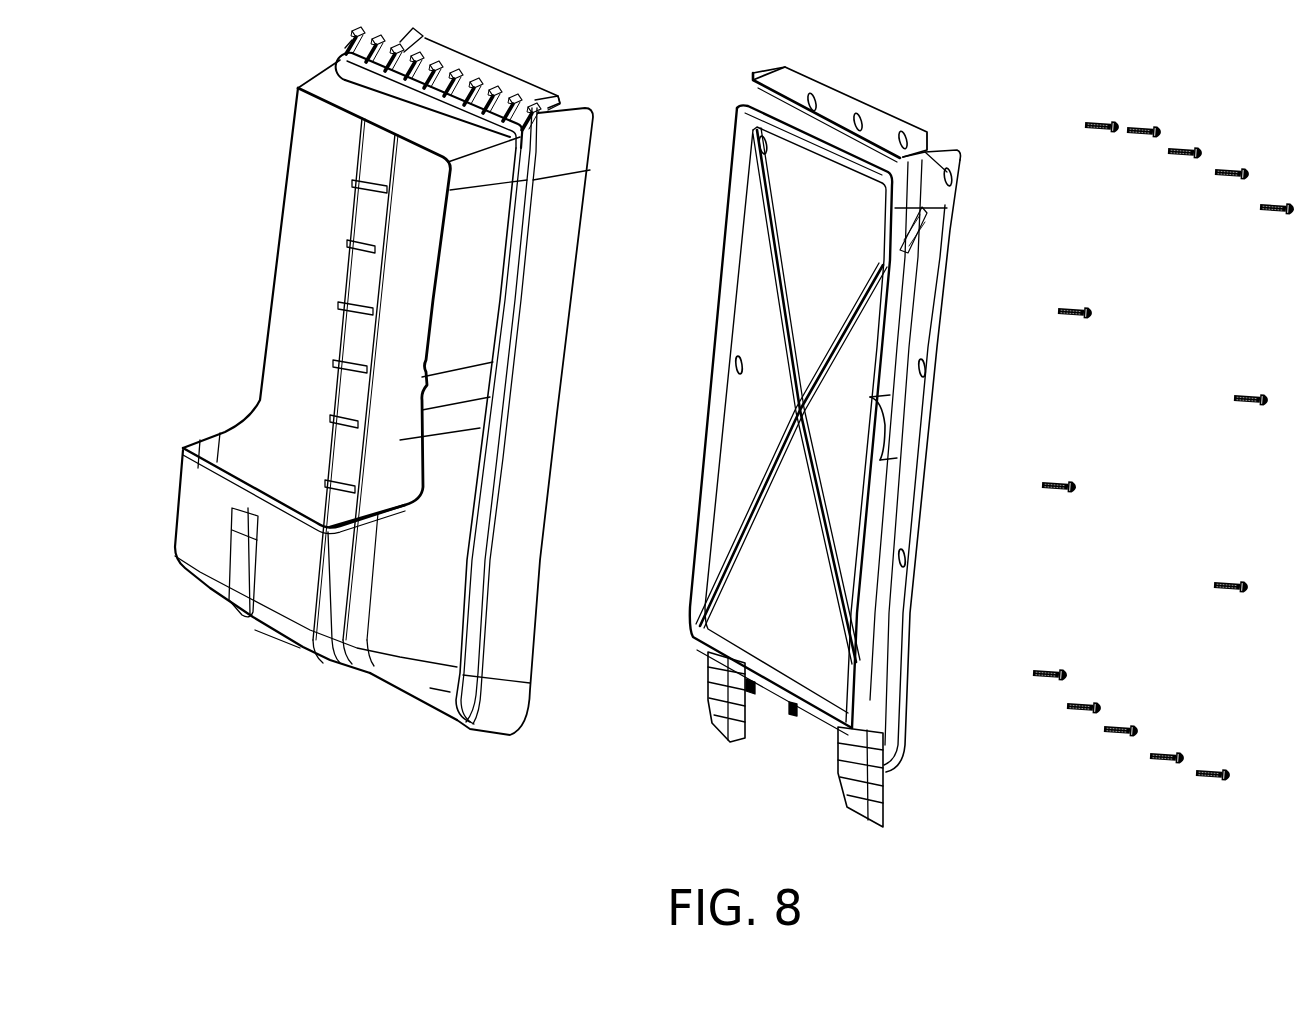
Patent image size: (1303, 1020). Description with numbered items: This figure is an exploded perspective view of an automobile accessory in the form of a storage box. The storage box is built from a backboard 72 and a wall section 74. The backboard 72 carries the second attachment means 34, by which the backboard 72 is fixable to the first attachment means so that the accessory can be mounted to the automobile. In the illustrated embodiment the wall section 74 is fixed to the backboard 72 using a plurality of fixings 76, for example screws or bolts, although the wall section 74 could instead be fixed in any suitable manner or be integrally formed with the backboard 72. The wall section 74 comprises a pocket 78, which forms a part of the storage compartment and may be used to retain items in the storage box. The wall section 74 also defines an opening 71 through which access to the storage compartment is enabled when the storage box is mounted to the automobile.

The opening 71 is at (288, 128).
The backboard 72 is at (832, 98).
The wall section 74 is at (507, 78).
The fixings 76 is at (1137, 128).
The pocket 78 is at (255, 440).
The second attachment means 34 is at (880, 827).